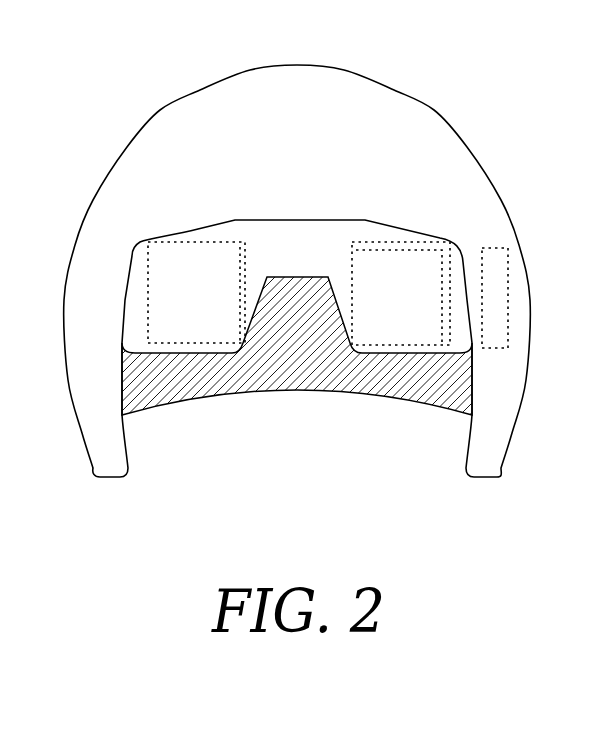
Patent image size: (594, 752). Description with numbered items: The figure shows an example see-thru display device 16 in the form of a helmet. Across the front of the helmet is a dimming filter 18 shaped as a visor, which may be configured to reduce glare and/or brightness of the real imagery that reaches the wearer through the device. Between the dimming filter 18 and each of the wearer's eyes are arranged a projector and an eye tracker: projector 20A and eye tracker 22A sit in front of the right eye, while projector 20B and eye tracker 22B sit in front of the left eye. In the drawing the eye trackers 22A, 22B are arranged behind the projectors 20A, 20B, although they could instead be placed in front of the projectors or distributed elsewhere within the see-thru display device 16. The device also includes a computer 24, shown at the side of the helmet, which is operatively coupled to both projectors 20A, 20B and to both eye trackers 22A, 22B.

The see-thru display device 16 is at (505, 110).
The dimming filter 18 is at (198, 232).
The projector 20A is at (212, 306).
The projector 20B is at (415, 308).
The eye tracker 22A is at (246, 266).
The eye tracker 22B is at (371, 243).
The computer 24 is at (508, 297).